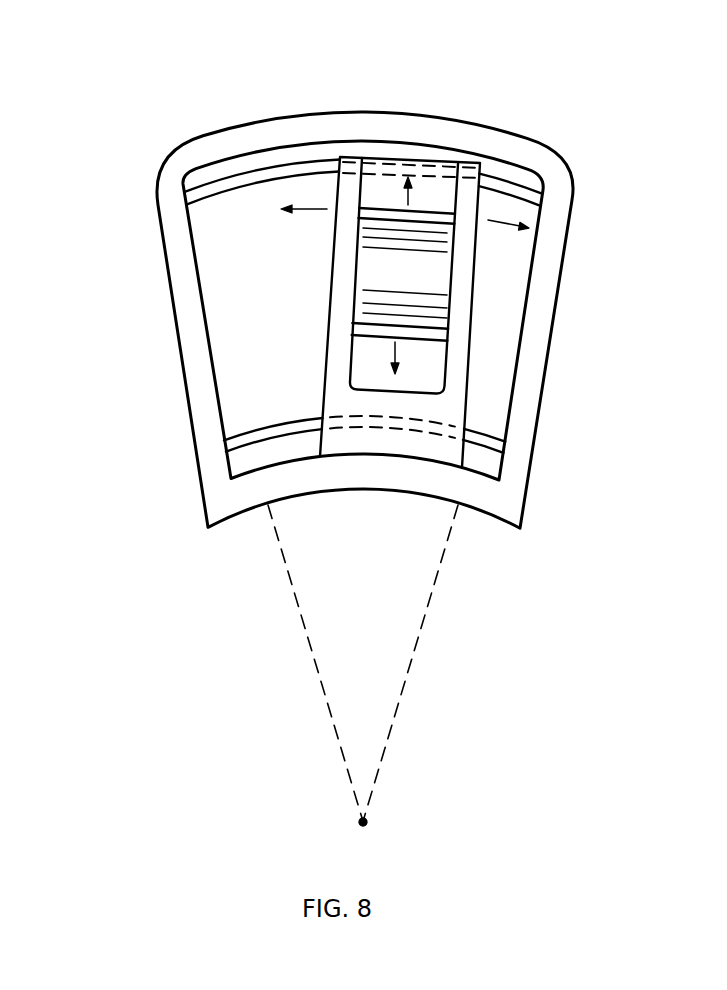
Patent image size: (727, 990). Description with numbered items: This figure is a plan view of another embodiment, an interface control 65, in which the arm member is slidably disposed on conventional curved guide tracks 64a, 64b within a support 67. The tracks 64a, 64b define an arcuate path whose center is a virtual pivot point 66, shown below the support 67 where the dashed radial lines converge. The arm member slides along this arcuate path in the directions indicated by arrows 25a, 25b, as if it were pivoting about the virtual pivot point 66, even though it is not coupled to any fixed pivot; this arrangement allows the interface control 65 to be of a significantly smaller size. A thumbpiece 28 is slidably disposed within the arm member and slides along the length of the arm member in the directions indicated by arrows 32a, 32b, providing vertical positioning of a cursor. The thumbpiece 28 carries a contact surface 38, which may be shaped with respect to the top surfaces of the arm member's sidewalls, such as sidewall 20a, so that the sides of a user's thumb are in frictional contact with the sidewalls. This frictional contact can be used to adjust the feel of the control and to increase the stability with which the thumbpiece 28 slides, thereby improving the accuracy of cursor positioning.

The interface control 65 is at (383, 76).
The support 67 is at (553, 228).
The curved guide track 64a is at (210, 190).
The curved guide track 64b is at (262, 433).
The sidewall 20a is at (340, 368).
The thumbpiece 28 is at (352, 322).
The contact surface 38 is at (413, 284).
The arrow 32a is at (402, 352).
The arrow 32b is at (412, 194).
The arrow 25a is at (507, 226).
The arrow 25b is at (307, 209).
The virtual pivot point 66 is at (369, 821).